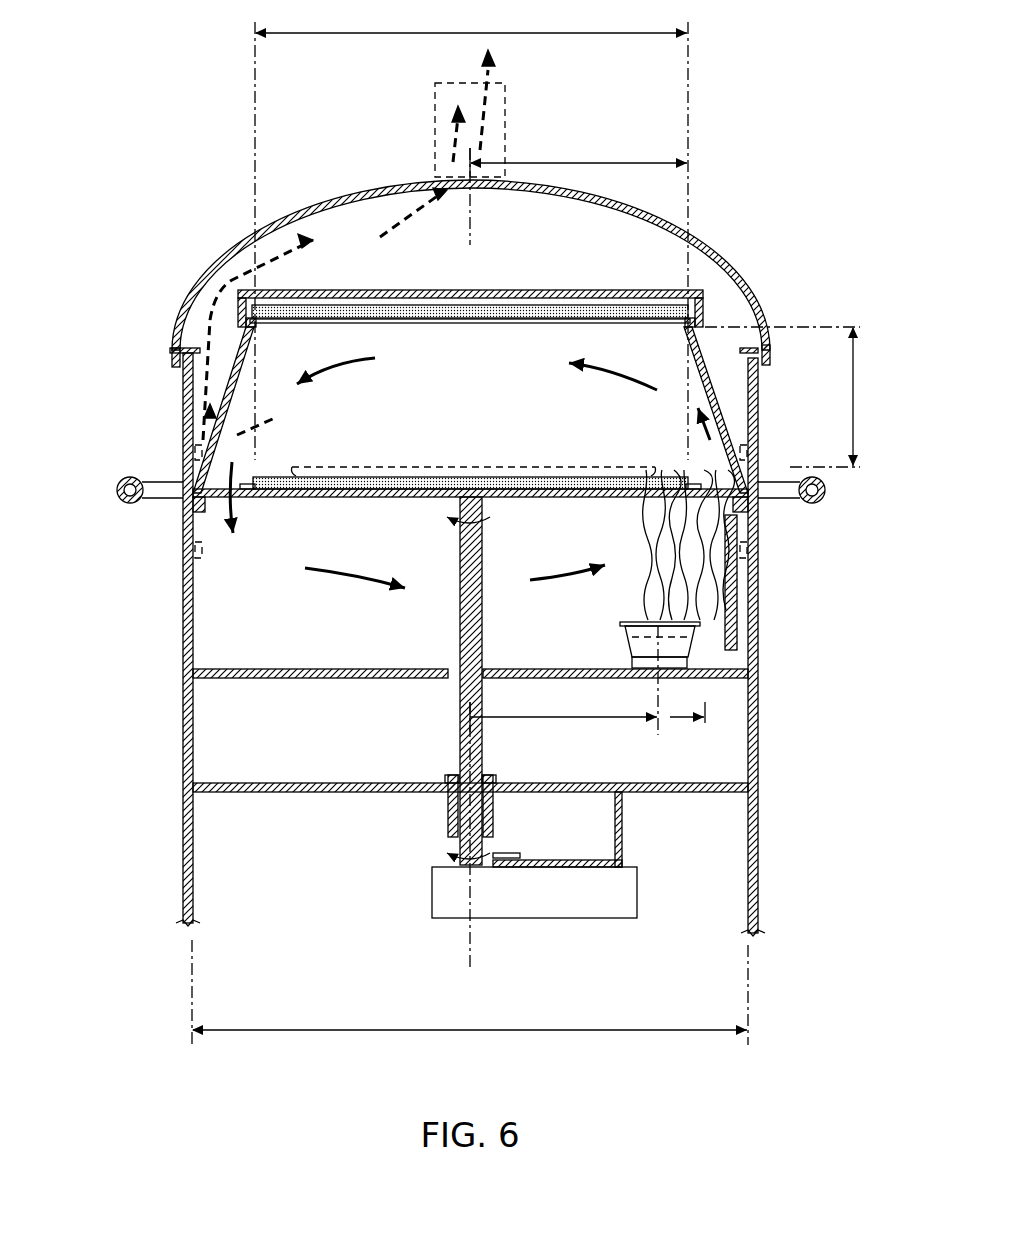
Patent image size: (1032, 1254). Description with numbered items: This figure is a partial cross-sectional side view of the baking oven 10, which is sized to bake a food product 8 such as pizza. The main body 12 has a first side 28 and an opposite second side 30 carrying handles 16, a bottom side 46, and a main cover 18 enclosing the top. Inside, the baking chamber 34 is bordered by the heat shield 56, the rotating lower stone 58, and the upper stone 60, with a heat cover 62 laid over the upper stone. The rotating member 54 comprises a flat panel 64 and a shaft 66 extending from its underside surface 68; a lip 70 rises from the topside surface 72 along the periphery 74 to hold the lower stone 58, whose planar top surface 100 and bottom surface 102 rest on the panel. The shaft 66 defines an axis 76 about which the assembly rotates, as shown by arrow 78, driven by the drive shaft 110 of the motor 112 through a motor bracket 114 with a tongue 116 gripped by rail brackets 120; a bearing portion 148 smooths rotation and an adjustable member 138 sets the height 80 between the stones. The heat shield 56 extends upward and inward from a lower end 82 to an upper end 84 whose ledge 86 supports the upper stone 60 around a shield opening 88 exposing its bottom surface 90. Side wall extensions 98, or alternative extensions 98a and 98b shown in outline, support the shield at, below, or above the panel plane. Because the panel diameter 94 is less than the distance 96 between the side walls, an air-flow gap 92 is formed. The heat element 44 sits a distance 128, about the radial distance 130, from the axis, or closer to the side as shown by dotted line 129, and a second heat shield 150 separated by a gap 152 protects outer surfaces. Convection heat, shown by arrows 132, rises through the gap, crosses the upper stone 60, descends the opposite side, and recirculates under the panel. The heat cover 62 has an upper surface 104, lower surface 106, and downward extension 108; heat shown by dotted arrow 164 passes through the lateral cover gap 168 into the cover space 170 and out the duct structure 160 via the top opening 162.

The food product 8 is at (327, 467).
The baking oven 10 is at (158, 888).
The main body 12 is at (158, 606).
The handles 16 is at (822, 500).
The main cover 18 is at (735, 262).
The first side 28 is at (758, 630).
The second side 30 is at (183, 580).
The baking chamber 34 is at (458, 427).
The heat element 44 is at (620, 640).
The bottom side 46 is at (726, 797).
The rotating member 54 is at (497, 600).
The heat shield 56 is at (228, 400).
The lower stone 58 is at (577, 477).
The upper stone 60 is at (430, 322).
The heat cover 62 is at (572, 287).
The flat panel 64 is at (316, 502).
The shaft 66 is at (460, 630).
The underside surface 68 is at (355, 500).
The lip 70 is at (268, 482).
The topside surface 72 is at (383, 497).
The periphery 74 is at (242, 497).
The axis 76 is at (474, 223).
The arrow 78 is at (487, 520).
The height 80 is at (855, 417).
The lower end 82 is at (205, 480).
The upper end 84 is at (244, 340).
The ledge 86 is at (662, 325).
The shield opening 88 is at (662, 323).
The bottom surface 90 is at (502, 323).
The air-flow gap 92 is at (205, 470).
The diameter 94 is at (600, 33).
The distance 96 is at (537, 1030).
The side wall extensions 98 is at (200, 515).
The side wall extensions 98a is at (198, 550).
The side wall extensions 98b is at (198, 452).
The top surface 100 is at (385, 470).
The bottom surface 102 is at (452, 487).
The upper surface 104 is at (302, 290).
The lower surface 106 is at (385, 303).
The downward extending extension 108 is at (213, 305).
The drive shaft 110 is at (440, 866).
The motor 112 is at (593, 918).
The motor bracket 114 is at (626, 833).
The tongue 116 is at (583, 855).
The rail brackets 120 is at (513, 851).
The distance 128 is at (568, 720).
The dotted line 129 is at (682, 720).
The radial distance 130 is at (598, 163).
The arrow 132 is at (372, 362).
The adjustable member 138 is at (447, 776).
The bearing portion 148 is at (447, 810).
The second heat shield 150 is at (738, 612).
The gap 152 is at (746, 664).
The duct structure 160 is at (505, 100).
The top opening 162 is at (436, 86).
The dotted arrow 164 is at (488, 80).
The lateral cover gap 168 is at (215, 290).
The cover space 170 is at (404, 249).